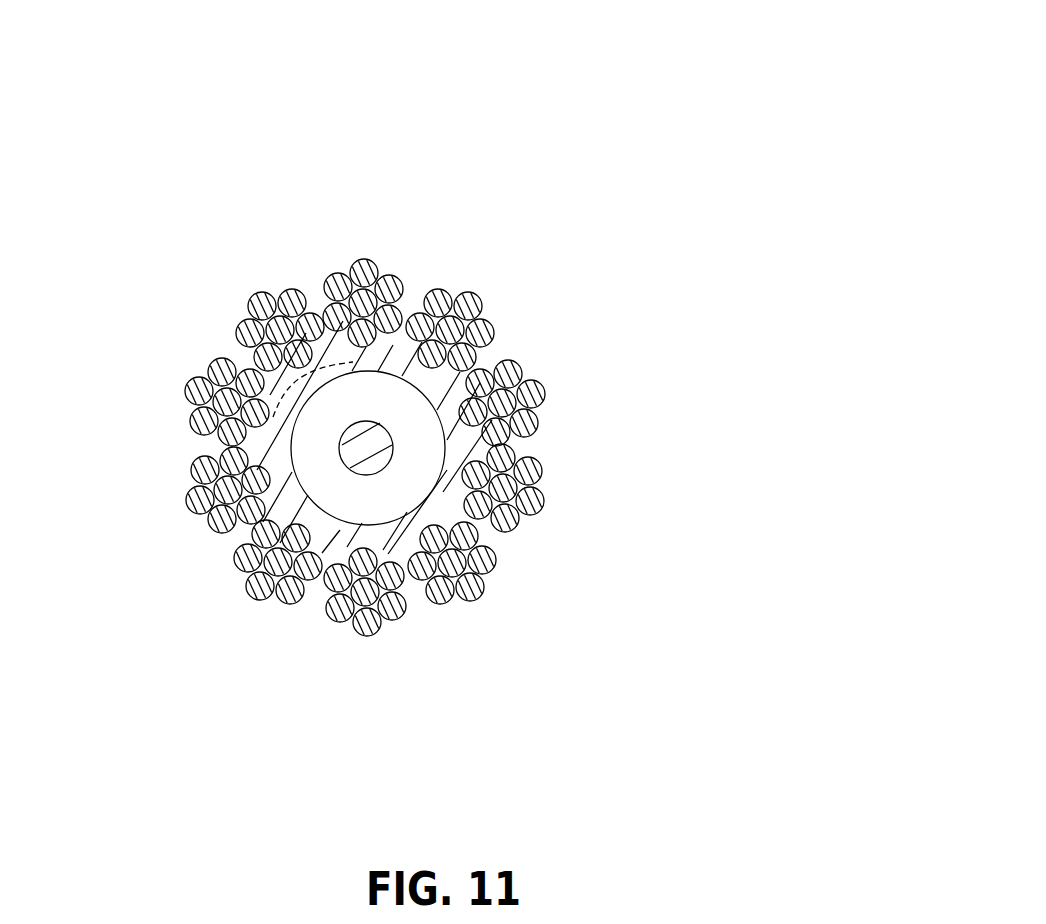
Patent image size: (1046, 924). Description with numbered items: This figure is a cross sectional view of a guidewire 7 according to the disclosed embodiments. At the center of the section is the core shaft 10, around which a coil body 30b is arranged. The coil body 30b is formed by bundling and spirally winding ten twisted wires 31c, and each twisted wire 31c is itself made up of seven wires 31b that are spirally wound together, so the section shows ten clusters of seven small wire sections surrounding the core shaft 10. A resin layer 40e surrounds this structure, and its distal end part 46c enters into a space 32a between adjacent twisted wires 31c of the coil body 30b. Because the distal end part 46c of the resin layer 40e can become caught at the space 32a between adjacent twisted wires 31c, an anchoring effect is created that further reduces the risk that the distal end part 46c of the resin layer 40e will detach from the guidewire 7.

The guidewire 7 is at (360, 137).
The core shaft 10 is at (358, 448).
The coil body 30b is at (488, 325).
The wires 31b is at (293, 592).
The twisted wires 31c is at (368, 640).
The space 32a is at (252, 364).
The resin layer 40e is at (626, 460).
The distal end part 46c is at (455, 447).